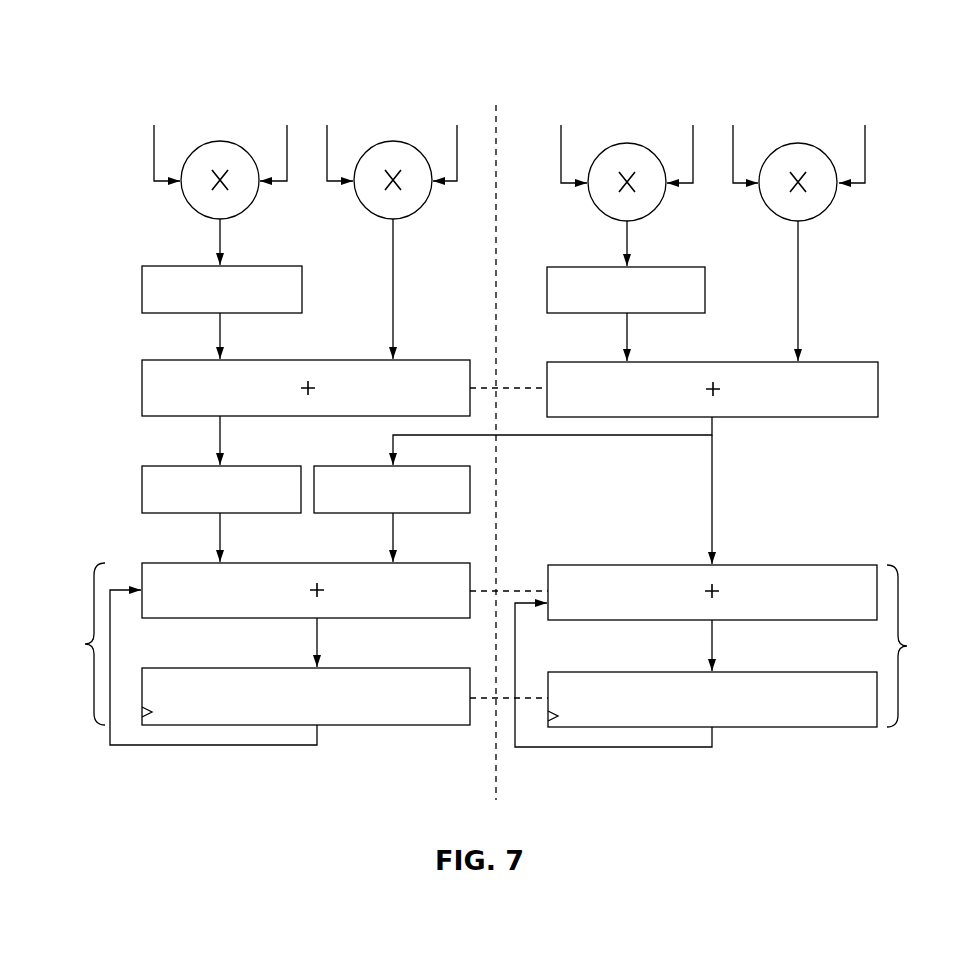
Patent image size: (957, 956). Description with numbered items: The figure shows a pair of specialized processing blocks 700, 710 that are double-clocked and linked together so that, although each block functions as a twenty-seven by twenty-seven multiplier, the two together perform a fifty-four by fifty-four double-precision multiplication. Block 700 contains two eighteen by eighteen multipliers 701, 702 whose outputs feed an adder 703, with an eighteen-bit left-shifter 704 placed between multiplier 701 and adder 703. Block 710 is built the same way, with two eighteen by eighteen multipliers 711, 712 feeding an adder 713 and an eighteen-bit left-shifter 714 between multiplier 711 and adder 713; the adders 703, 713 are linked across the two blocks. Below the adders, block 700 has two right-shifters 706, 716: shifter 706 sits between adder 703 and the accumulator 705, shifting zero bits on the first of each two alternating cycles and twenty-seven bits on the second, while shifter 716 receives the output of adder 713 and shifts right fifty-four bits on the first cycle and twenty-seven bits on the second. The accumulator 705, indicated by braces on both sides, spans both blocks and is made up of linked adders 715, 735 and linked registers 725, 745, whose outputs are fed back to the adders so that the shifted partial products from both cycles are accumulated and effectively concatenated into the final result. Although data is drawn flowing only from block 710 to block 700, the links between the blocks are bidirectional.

The specialized processing block 700 is at (180, 84).
The specialized processing block 710 is at (615, 84).
The 18x18 multiplier 701 is at (234, 216).
The 18x18 multiplier 702 is at (408, 216).
The 18x18 multiplier 711 is at (641, 218).
The 18x18 multiplier 712 is at (812, 218).
The 18-bit left-shifter 704 is at (207, 266).
The 18-bit left-shifter 714 is at (612, 267).
The adder 703 is at (207, 360).
The adder 713 is at (612, 362).
The right-shifter 706 is at (207, 466).
The right-shifter 716 is at (380, 466).
The adder 715 is at (207, 563).
The adder 735 is at (612, 565).
The register 725 is at (207, 668).
The register 745 is at (612, 672).
The accumulator 705 is at (498, 645).